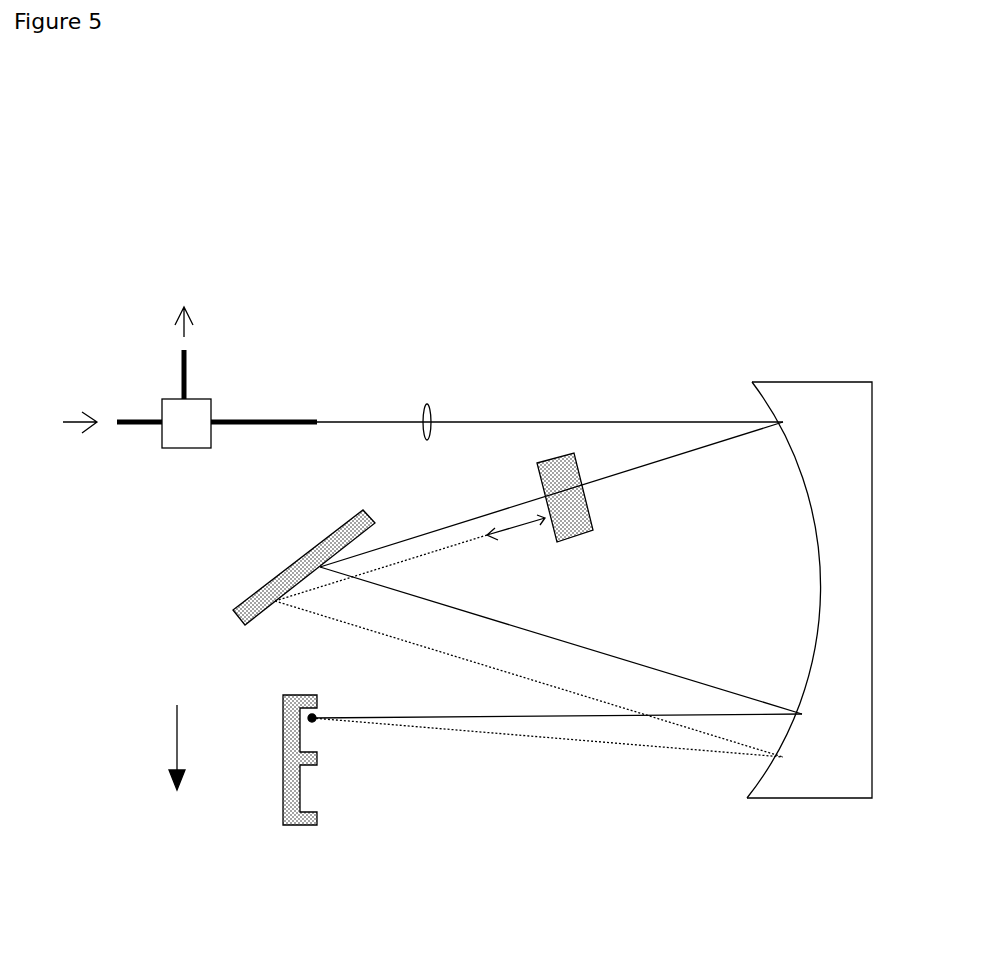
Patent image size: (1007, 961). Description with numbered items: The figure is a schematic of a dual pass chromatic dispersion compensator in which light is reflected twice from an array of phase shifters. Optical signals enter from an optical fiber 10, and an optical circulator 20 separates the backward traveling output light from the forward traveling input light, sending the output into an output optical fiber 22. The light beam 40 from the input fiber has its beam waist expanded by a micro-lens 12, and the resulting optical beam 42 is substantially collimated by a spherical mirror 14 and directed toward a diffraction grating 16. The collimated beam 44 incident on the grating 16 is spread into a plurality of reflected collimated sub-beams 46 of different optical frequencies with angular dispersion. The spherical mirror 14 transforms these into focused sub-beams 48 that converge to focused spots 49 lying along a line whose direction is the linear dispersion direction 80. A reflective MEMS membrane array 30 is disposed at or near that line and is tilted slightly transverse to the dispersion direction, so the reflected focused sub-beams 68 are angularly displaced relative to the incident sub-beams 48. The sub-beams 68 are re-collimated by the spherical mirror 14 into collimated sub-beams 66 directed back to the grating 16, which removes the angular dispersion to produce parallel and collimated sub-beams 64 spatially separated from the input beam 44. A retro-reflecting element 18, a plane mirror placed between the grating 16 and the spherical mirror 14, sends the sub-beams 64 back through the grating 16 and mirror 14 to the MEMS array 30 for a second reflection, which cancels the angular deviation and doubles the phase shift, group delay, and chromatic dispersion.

The optical fiber 10 is at (128, 427).
The micro-lens 12 is at (427, 405).
The spherical mirror 14 is at (810, 402).
The diffraction grating 16 is at (270, 587).
The retro-reflecting element 18 is at (595, 522).
The optical circulator 20 is at (185, 435).
The output optical fiber 22 is at (187, 367).
The reflective MEMS membrane array 30 is at (287, 743).
The light beam 40 is at (355, 420).
The optical beam 42 is at (617, 420).
The collimated beam 44 is at (667, 458).
The reflected collimated sub-beams 46 is at (700, 682).
The focused sub-beams 48 is at (587, 717).
The focused spots 49 is at (313, 725).
The parallel and collimated sub-beams 64 is at (457, 543).
The collimated sub-beams 66 is at (567, 690).
The reflected focused sub-beams 68 is at (512, 734).
The linear dispersion direction 80 is at (163, 747).